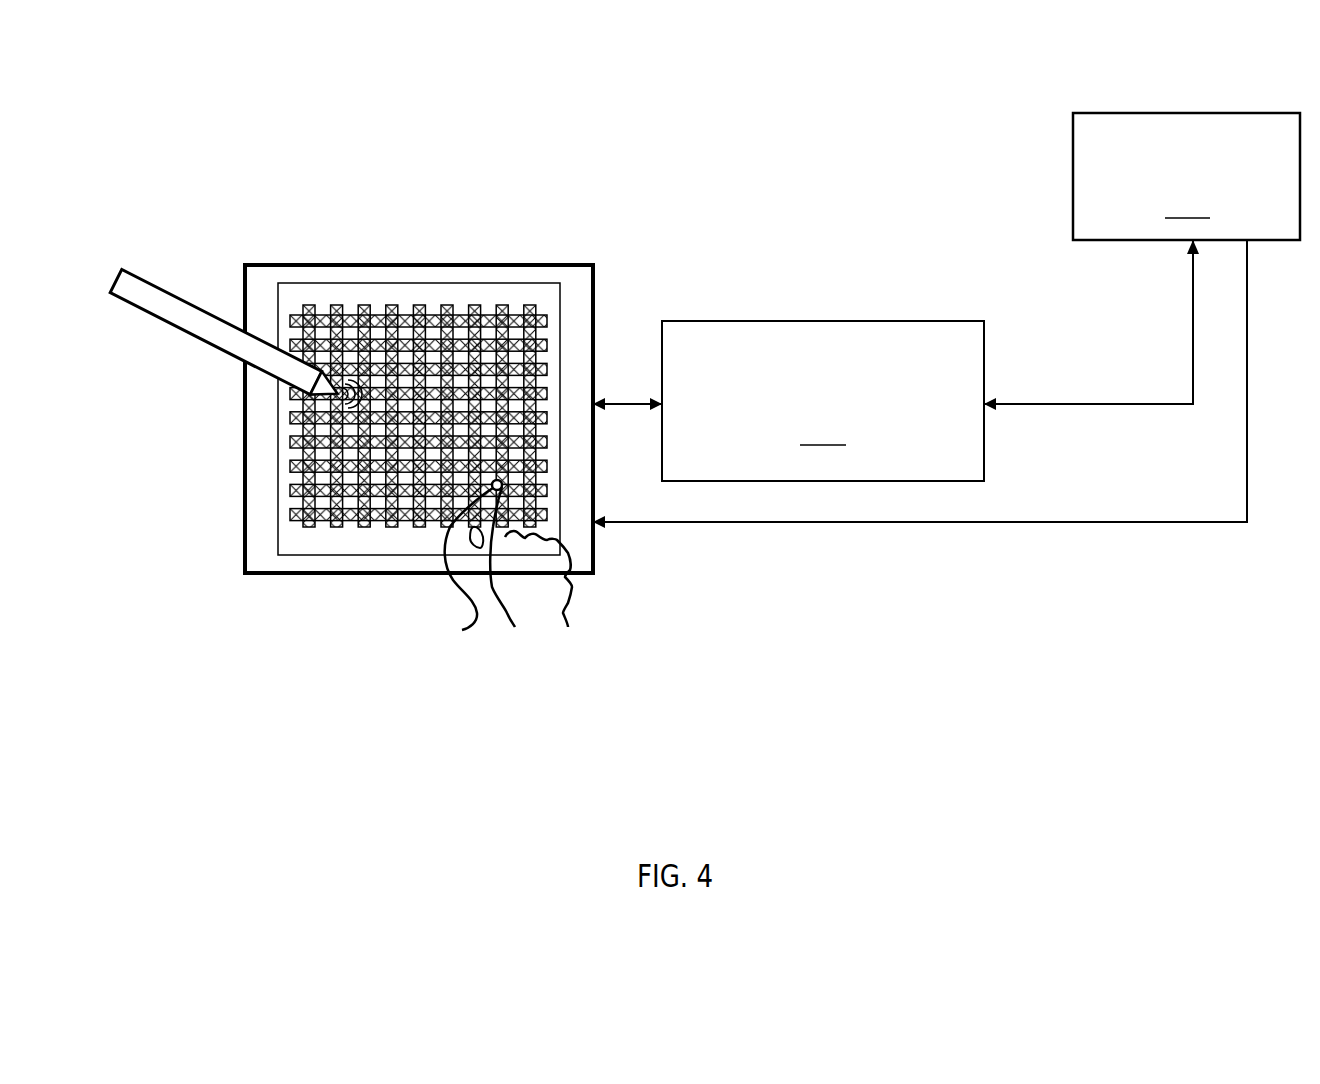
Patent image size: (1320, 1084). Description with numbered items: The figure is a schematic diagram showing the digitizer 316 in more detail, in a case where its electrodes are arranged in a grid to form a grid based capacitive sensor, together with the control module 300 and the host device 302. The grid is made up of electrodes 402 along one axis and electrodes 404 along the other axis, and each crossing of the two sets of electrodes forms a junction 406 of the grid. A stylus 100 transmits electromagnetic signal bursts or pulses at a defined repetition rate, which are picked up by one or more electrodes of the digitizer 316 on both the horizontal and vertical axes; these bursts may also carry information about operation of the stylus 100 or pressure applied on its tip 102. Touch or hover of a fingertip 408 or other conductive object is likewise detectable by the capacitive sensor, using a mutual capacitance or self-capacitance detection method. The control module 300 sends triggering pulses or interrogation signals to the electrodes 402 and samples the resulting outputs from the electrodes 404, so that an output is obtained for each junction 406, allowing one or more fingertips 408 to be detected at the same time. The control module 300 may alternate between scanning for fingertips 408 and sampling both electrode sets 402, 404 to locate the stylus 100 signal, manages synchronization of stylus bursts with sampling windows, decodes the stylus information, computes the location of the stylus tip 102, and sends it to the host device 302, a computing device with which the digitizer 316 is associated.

The stylus 100 is at (201, 306).
The tip 102 is at (337, 397).
The control module 300 is at (788, 401).
The host device 302 is at (946, 320).
The digitizer 316 is at (596, 334).
The electrodes 402 is at (287, 438).
The electrodes 404 is at (470, 307).
The junction 406 is at (390, 484).
The fingertip 408 is at (462, 630).